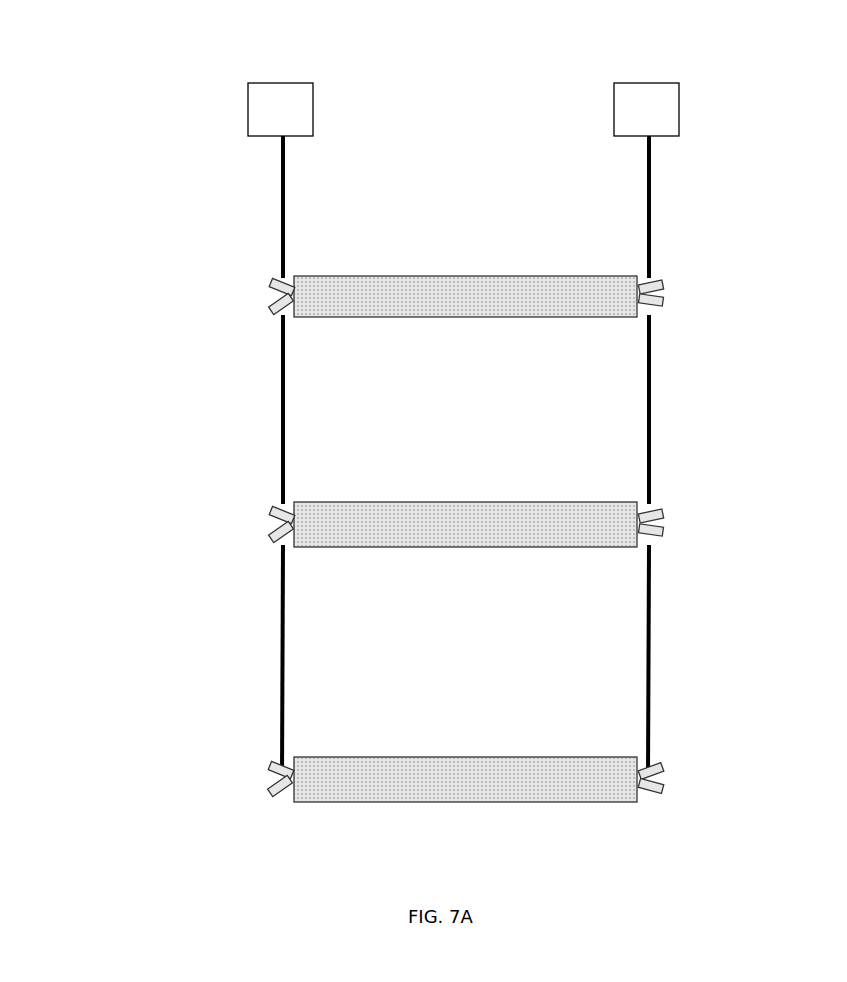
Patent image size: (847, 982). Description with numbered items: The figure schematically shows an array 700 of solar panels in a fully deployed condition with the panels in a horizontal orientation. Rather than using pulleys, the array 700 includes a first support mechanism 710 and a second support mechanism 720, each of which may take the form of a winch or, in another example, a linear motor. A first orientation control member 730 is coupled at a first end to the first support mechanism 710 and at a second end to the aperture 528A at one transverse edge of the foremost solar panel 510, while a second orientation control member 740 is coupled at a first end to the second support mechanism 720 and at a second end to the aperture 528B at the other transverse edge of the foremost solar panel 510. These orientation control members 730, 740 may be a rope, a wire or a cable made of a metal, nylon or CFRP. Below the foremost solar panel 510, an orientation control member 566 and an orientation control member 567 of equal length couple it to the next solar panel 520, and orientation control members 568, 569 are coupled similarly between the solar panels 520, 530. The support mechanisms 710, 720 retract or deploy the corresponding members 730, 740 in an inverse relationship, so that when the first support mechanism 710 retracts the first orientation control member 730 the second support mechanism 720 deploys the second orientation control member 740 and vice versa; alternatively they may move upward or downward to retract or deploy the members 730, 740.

The array 700 is at (475, 128).
The first support mechanism 710 is at (679, 110).
The second support mechanism 720 is at (248, 118).
The first orientation control member 730 is at (652, 207).
The second orientation control member 740 is at (280, 221).
The foremost solar panel 510 is at (344, 287).
The solar panel 520 is at (352, 511).
The solar panel 530 is at (370, 770).
The aperture 528A is at (664, 280).
The aperture 528B is at (276, 282).
The orientation control member 566 is at (283, 417).
The orientation control member 567 is at (652, 442).
The orientation control member 568 is at (283, 645).
The orientation control member 569 is at (651, 655).